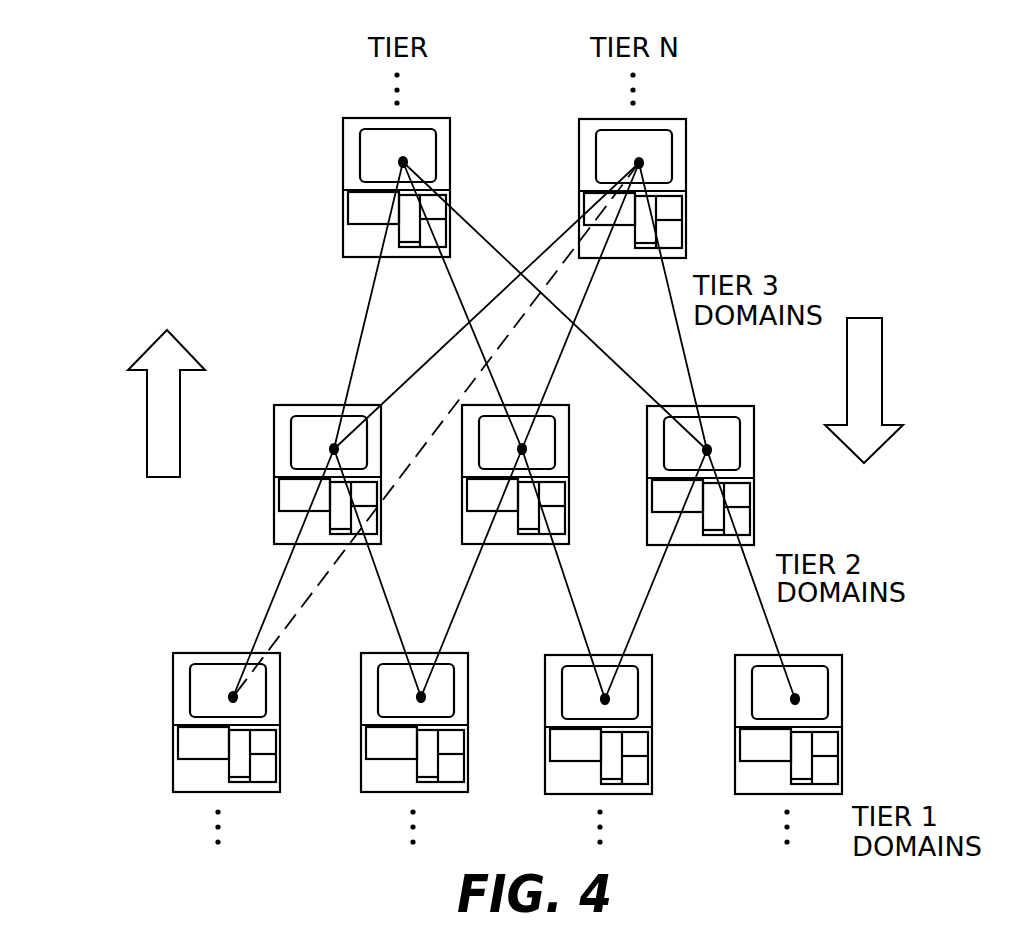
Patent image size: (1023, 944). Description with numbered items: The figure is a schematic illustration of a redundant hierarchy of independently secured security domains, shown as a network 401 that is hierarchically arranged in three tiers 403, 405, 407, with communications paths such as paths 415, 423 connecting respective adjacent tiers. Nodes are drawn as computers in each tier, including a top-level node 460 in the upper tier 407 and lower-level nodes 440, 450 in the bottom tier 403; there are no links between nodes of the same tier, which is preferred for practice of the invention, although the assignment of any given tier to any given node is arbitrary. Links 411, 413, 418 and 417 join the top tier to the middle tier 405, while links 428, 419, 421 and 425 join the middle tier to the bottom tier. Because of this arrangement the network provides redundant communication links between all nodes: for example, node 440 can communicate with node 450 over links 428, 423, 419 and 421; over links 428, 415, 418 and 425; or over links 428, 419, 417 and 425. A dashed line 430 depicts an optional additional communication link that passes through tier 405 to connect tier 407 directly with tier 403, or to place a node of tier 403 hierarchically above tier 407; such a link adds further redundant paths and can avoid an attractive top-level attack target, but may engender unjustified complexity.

The network 401 is at (346, 822).
The tier 403 is at (187, 722).
The tier 405 is at (816, 505).
The tier 407 is at (722, 126).
The communication link 411 is at (452, 283).
The communication link 413 is at (590, 280).
The communications path 415 is at (362, 326).
The communication link 417 is at (687, 352).
The communication link 418 is at (470, 223).
The communication link 419 is at (540, 248).
The communication link 421 is at (561, 566).
The communications path 423 is at (397, 622).
The communication link 425 is at (642, 607).
The communication link 428 is at (273, 593).
The dashed line communication link 430 is at (520, 318).
The node 440 is at (282, 767).
The node 450 is at (653, 767).
The node 460 is at (452, 137).